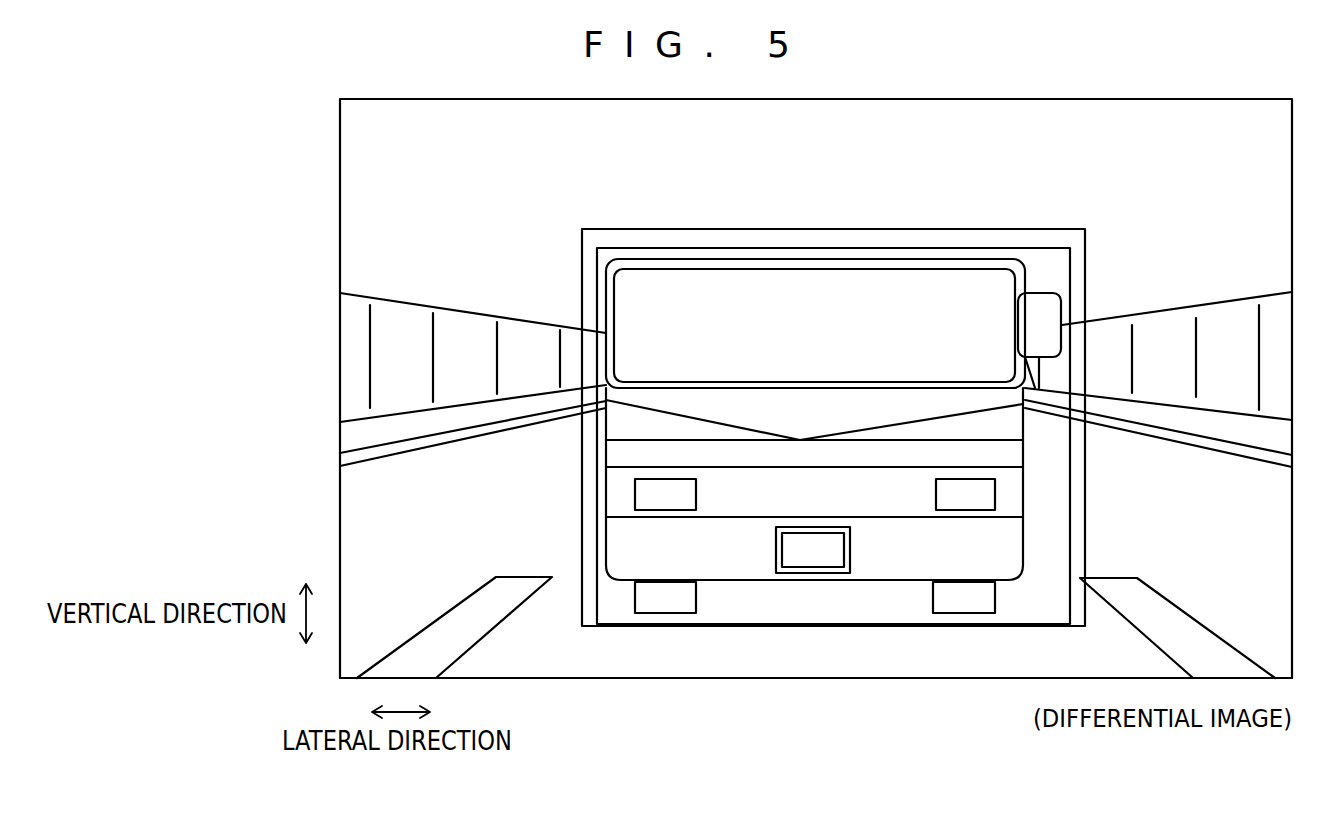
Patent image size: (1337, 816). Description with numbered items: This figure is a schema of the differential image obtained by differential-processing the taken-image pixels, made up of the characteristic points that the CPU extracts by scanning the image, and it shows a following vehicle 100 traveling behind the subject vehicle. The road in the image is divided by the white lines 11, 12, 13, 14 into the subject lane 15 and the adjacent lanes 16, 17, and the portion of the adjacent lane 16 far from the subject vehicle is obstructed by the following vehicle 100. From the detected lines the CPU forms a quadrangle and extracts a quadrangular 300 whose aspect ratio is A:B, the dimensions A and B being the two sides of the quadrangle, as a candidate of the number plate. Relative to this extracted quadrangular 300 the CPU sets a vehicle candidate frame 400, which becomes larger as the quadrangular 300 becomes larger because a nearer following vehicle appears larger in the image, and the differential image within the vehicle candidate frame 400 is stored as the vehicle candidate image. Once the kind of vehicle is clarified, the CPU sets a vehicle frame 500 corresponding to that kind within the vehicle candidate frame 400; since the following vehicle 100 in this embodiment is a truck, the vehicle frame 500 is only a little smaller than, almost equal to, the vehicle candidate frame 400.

The white line 11 is at (412, 443).
The white line 12 is at (463, 615).
The white line 13 is at (1143, 607).
The white line 14 is at (1167, 436).
The subject lane 15 is at (877, 655).
The adjacent lane 16 is at (363, 514).
The adjacent lane 17 is at (459, 340).
The following vehicle 100 is at (970, 258).
The quadrangular 300 is at (777, 550).
The vehicle candidate frame 400 is at (862, 203).
The vehicle frame 500 is at (700, 248).
The aspect ratio dimension A is at (853, 527).
The aspect ratio dimension B is at (850, 573).